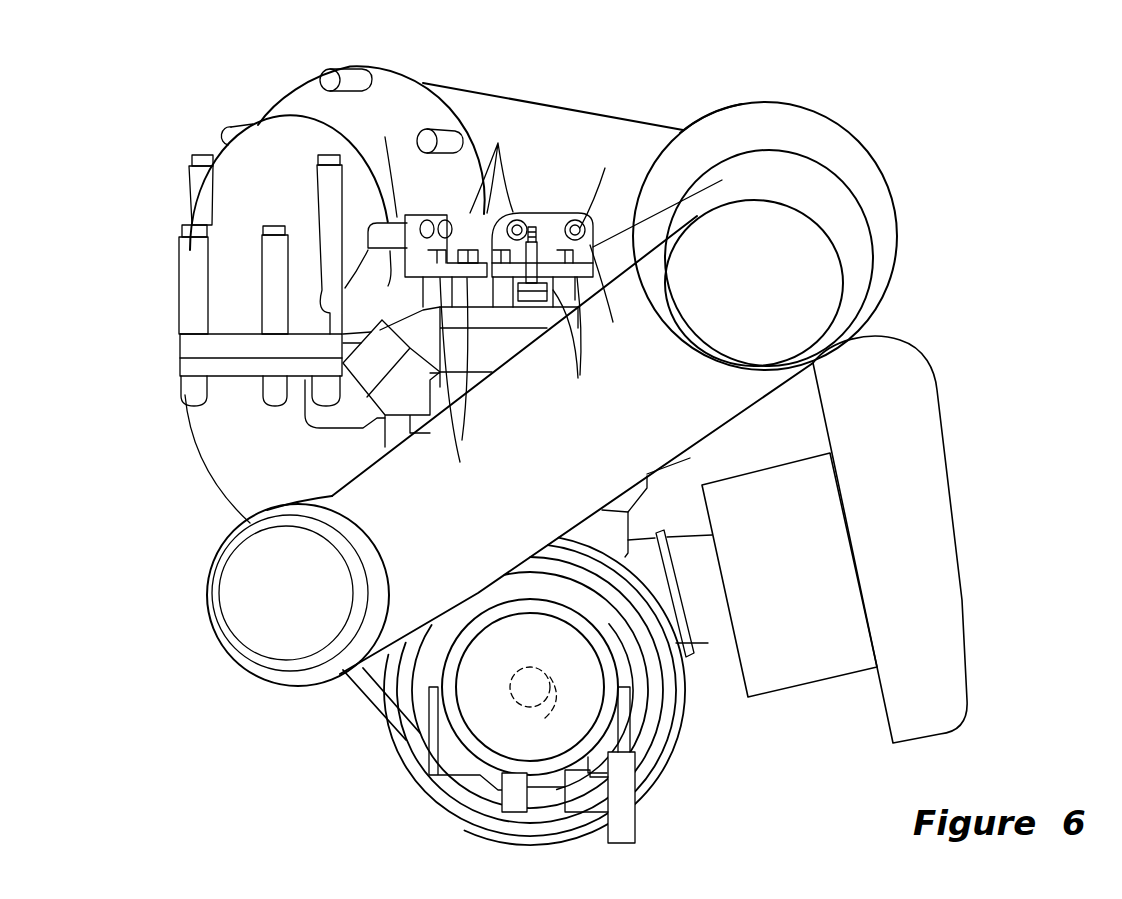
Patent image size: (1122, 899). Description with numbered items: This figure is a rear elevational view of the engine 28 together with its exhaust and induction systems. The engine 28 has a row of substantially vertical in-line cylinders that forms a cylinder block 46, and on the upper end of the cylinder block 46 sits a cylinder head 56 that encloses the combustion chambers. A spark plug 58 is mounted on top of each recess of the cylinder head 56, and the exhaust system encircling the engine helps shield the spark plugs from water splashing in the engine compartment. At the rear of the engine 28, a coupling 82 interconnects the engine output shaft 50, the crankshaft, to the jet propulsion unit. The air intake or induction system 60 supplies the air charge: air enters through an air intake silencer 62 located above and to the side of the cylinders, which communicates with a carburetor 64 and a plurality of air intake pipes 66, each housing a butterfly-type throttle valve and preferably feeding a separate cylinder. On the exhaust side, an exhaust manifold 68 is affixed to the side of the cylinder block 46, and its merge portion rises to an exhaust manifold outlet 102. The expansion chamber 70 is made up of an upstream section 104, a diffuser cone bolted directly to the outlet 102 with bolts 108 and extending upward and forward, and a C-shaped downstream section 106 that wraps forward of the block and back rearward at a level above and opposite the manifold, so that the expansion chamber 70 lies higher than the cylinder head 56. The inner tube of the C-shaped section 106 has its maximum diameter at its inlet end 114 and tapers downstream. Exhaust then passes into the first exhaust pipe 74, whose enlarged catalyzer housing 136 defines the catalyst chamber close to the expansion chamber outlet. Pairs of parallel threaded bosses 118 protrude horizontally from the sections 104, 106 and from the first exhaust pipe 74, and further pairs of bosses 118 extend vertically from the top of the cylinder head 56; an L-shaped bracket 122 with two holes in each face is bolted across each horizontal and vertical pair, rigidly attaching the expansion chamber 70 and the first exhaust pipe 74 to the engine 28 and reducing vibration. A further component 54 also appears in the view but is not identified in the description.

The engine 28 is at (347, 738).
The cylinder block 46 is at (648, 485).
The engine output shaft 50 is at (530, 690).
The mounting link 54 is at (630, 522).
The cylinder head 56 is at (493, 355).
The spark plug 58 is at (549, 213).
The air intake or induction system 60 is at (790, 714).
The air intake silencer 62 is at (968, 612).
The carburetor 64 is at (817, 683).
The air intake pipes 66 is at (712, 650).
The exhaust manifold 68 is at (197, 498).
The expansion chamber 70 is at (545, 91).
The first exhaust pipe 74 is at (757, 414).
The coupling 82 is at (453, 737).
The exhaust manifold outlet 102 is at (180, 357).
The upstream section 104 is at (225, 153).
The C-shaped downstream section 106 is at (653, 123).
The bolts 108 is at (330, 317).
The inlet end 114 is at (313, 115).
The bosses 118 is at (505, 300).
The L-shaped bracket 122 is at (405, 270).
The catalyzer housing 136 is at (887, 177).